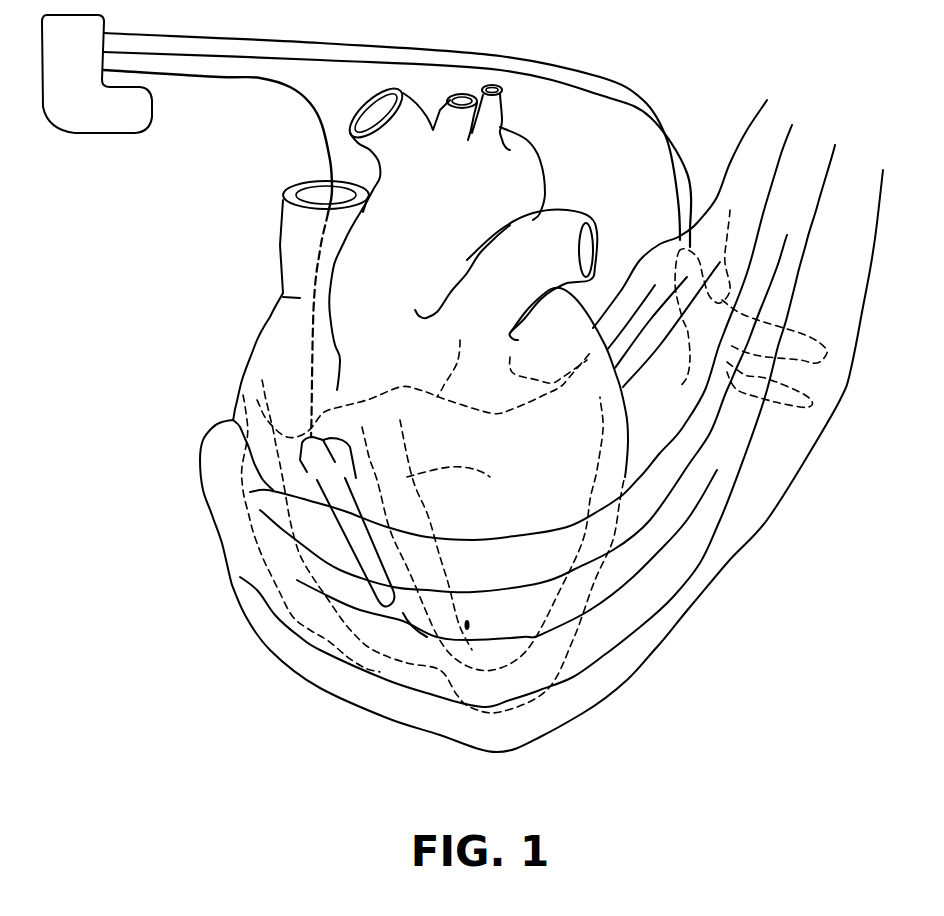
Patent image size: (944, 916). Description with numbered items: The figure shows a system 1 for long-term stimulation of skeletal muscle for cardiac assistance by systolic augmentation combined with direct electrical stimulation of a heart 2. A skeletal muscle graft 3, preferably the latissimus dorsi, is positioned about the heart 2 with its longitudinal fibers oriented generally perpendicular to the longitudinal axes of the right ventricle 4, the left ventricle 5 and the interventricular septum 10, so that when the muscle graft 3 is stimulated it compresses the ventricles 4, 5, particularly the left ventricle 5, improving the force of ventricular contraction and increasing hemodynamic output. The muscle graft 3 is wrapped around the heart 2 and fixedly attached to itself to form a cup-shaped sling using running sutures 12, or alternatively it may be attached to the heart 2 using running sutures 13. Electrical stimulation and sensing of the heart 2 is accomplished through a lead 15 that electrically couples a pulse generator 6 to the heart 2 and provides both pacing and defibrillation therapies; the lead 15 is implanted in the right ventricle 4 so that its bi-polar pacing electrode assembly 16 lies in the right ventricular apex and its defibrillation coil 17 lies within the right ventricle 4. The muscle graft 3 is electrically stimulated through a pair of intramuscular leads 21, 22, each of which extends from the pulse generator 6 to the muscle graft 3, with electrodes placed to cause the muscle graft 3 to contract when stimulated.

The system 1 is at (188, 632).
The heart 2 is at (218, 325).
The skeletal muscle graft 3 is at (860, 210).
The right ventricle 4 is at (240, 393).
The left ventricle 5 is at (583, 450).
The pulse generator 6 is at (70, 112).
The interventricular septum 10 is at (493, 495).
The running sutures 12 is at (233, 540).
The running sutures 13 is at (302, 503).
The lead 15 is at (218, 78).
The bi-polar pacing electrode assembly 16 is at (470, 683).
The defibrillation coil 17 is at (350, 470).
The lead 21 is at (719, 242).
The lead 22 is at (668, 326).